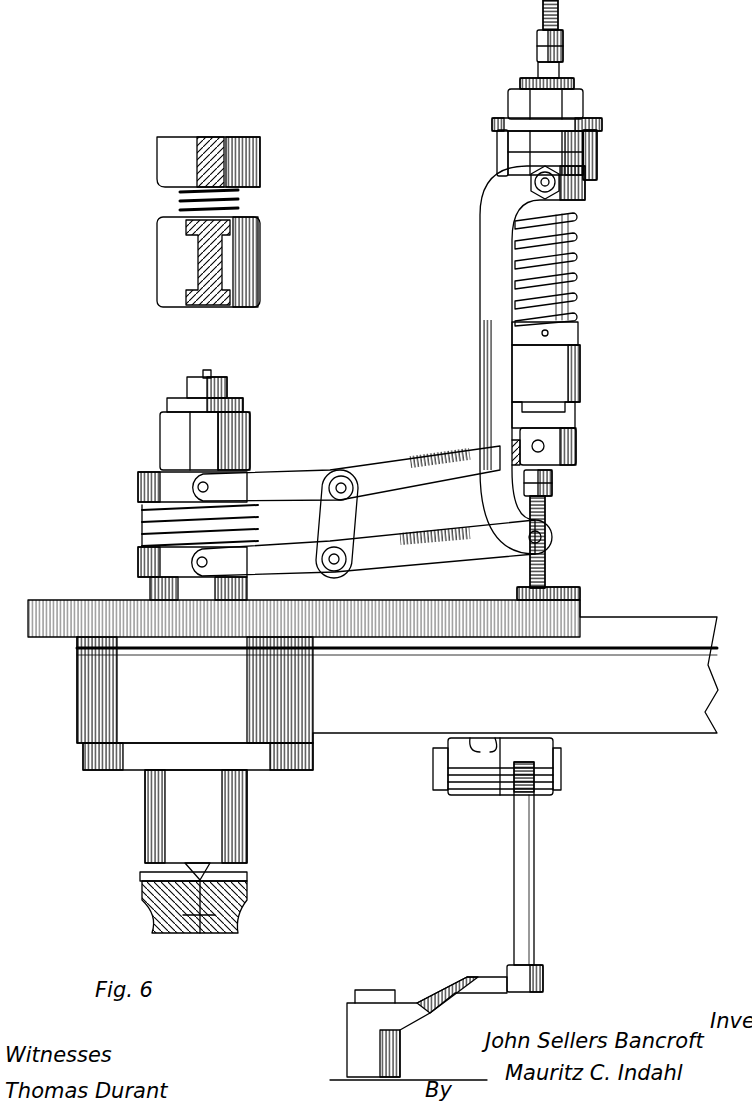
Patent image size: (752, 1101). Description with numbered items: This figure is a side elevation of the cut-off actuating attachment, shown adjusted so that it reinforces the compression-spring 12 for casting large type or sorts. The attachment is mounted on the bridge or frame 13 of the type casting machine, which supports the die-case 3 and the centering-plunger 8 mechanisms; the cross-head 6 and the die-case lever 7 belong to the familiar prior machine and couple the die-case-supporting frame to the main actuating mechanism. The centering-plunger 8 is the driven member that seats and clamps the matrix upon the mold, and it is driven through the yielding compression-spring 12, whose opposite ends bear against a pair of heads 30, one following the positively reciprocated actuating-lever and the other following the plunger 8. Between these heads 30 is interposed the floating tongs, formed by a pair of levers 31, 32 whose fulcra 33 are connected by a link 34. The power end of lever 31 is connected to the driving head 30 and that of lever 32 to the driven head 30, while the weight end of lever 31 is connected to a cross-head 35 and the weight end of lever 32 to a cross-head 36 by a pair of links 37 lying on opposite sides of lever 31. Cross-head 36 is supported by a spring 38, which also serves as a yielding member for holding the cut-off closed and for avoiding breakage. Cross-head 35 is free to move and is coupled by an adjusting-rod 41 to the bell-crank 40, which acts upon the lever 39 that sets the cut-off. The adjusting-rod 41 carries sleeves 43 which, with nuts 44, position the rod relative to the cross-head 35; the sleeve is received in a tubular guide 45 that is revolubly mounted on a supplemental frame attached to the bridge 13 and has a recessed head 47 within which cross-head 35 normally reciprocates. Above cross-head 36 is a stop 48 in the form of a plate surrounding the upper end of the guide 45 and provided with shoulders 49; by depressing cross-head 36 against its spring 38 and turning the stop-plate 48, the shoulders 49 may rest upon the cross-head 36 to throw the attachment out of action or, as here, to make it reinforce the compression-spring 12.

The die-case 3 is at (250, 888).
The cross-head 6 is at (192, 262).
The die-case lever 7 is at (218, 173).
The centering-plunger 8 is at (210, 375).
The compression-spring 12 is at (140, 523).
The bridge or frame 13 is at (373, 678).
The heads 30 is at (136, 485).
The lever 31 is at (300, 470).
The lever 32 is at (363, 548).
The fulcra 33 is at (348, 470).
The link 34 is at (346, 525).
The cross-head 35 is at (577, 450).
The cross-head 36 is at (562, 183).
The links 37 is at (481, 280).
The spring 38 is at (580, 300).
The lever 39 is at (418, 1028).
The bell-crank 40 is at (539, 877).
The adjusting-rod 41 is at (548, 738).
The sleeves 43 is at (560, 70).
The nuts 44 is at (564, 52).
The tubular guide 45 is at (575, 85).
The recessed head 47 is at (560, 425).
The stop 48 is at (603, 125).
The shoulders or projections 49 is at (496, 146).